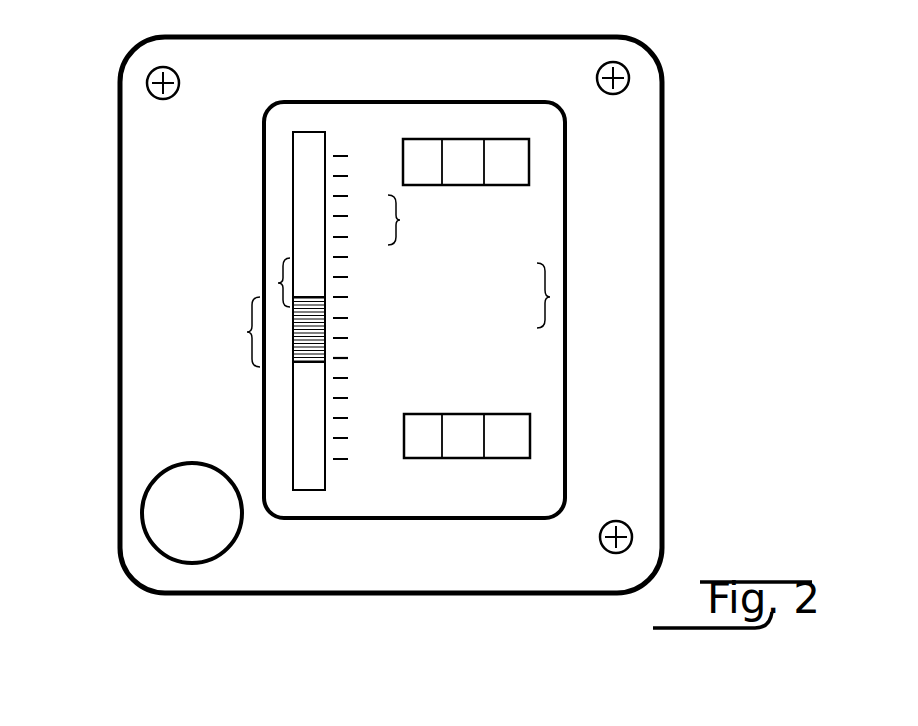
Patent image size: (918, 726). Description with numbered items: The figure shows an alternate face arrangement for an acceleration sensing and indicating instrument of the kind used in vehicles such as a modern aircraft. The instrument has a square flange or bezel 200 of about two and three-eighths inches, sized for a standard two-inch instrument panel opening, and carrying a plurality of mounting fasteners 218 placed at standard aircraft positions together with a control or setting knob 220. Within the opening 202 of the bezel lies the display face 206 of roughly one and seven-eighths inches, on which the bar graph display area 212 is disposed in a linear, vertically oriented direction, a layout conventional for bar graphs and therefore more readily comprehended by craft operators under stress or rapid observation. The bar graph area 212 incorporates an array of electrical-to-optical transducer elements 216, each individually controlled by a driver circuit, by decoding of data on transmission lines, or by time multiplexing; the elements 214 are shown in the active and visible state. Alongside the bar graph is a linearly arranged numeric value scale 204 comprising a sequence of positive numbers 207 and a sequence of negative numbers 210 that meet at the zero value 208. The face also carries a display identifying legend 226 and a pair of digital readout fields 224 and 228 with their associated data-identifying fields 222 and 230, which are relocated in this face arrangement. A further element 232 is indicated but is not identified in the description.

The bezel 200 is at (120, 216).
The opening 202 is at (506, 98).
The numeric value scale 204 is at (334, 156).
The display face 206 is at (417, 108).
The sequence of positive numbers 207 is at (400, 221).
The zero value 208 is at (341, 361).
The sequence of negative numbers 210 is at (338, 440).
The bar graph display area 212 is at (298, 132).
The active transducer elements 214 is at (250, 332).
The transducer elements 216 is at (280, 283).
The mounting fasteners 218 is at (147, 83).
The setting knob 220 is at (142, 514).
The data-identifying field 222 is at (510, 200).
The digital readout field 224 is at (530, 162).
The display identifying legend 226 is at (550, 297).
The digital readout field 228 is at (530, 433).
The data-identifying field 230 is at (477, 483).
The legend indicator 232 is at (423, 477).